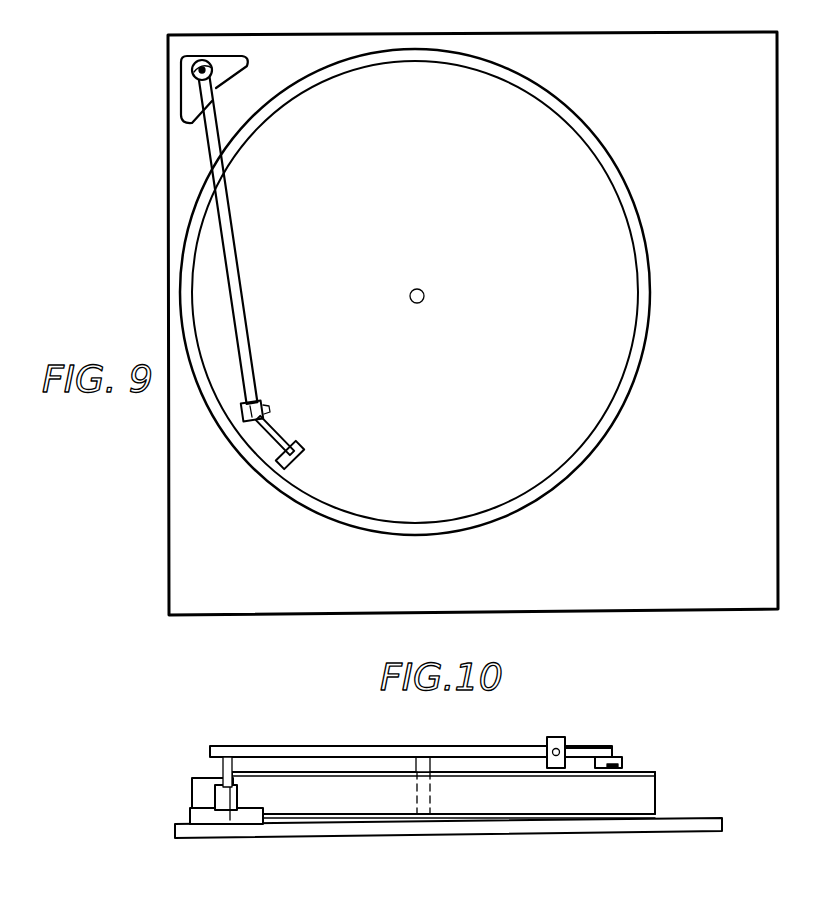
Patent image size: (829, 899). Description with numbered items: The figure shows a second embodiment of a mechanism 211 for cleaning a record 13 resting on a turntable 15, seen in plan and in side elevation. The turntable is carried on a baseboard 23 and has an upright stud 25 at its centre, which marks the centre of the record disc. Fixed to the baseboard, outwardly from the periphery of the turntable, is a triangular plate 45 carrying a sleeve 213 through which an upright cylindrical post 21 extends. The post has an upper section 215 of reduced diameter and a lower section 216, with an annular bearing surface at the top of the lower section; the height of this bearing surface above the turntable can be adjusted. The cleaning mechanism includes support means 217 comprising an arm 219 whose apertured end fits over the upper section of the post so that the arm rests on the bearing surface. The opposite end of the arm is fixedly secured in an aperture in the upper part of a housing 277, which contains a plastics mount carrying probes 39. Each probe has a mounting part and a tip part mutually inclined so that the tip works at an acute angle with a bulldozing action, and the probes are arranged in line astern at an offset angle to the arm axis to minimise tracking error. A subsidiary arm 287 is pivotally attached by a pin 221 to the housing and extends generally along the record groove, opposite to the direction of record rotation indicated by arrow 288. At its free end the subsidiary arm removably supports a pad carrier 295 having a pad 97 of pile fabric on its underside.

In FIG. 9, the record 13 is at (447, 292).
In FIG. 10, the record 13 is at (640, 770).
In FIG. 9, the turntable 15 is at (652, 319).
In FIG. 10, the turntable 15 is at (657, 782).
In FIG. 9, the upright cylindrical post 21 is at (203, 62).
In FIG. 10, the upright cylindrical post 21 is at (220, 798).
In FIG. 9, the baseboard 23 is at (717, 465).
In FIG. 10, the baseboard 23 is at (683, 818).
In FIG. 9, the upright stud 25 is at (417, 303).
In FIG. 10, the upright stud 25 is at (410, 820).
In FIG. 10, the probes 39 is at (557, 772).
In FIG. 9, the triangular plate 45 is at (231, 53).
In FIG. 10, the triangular plate 45 is at (249, 817).
In FIG. 10, the pad 97 is at (623, 765).
In FIG. 9, the mechanism 211 is at (182, 159).
In FIG. 10, the mechanism 211 is at (186, 748).
In FIG. 9, the sleeve 213 is at (236, 72).
In FIG. 10, the sleeve 213 is at (237, 802).
In FIG. 10, the upper section 215 is at (227, 746).
In FIG. 10, the lower section 216 is at (215, 778).
In FIG. 9, the support means 217 is at (200, 172).
In FIG. 10, the support means 217 is at (313, 740).
In FIG. 9, the arm 219 is at (236, 243).
In FIG. 10, the arm 219 is at (468, 746).
In FIG. 9, the pin 221 is at (268, 402).
In FIG. 10, the pin 221 is at (549, 737).
In FIG. 9, the housing 277 is at (248, 420).
In FIG. 10, the housing 277 is at (572, 745).
In FIG. 9, the subsidiary arm 287 is at (270, 414).
In FIG. 10, the subsidiary arm 287 is at (578, 748).
In FIG. 9, the arrow 288 is at (475, 560).
In FIG. 9, the pad carrier 295 is at (305, 451).
In FIG. 10, the pad carrier 295 is at (608, 768).